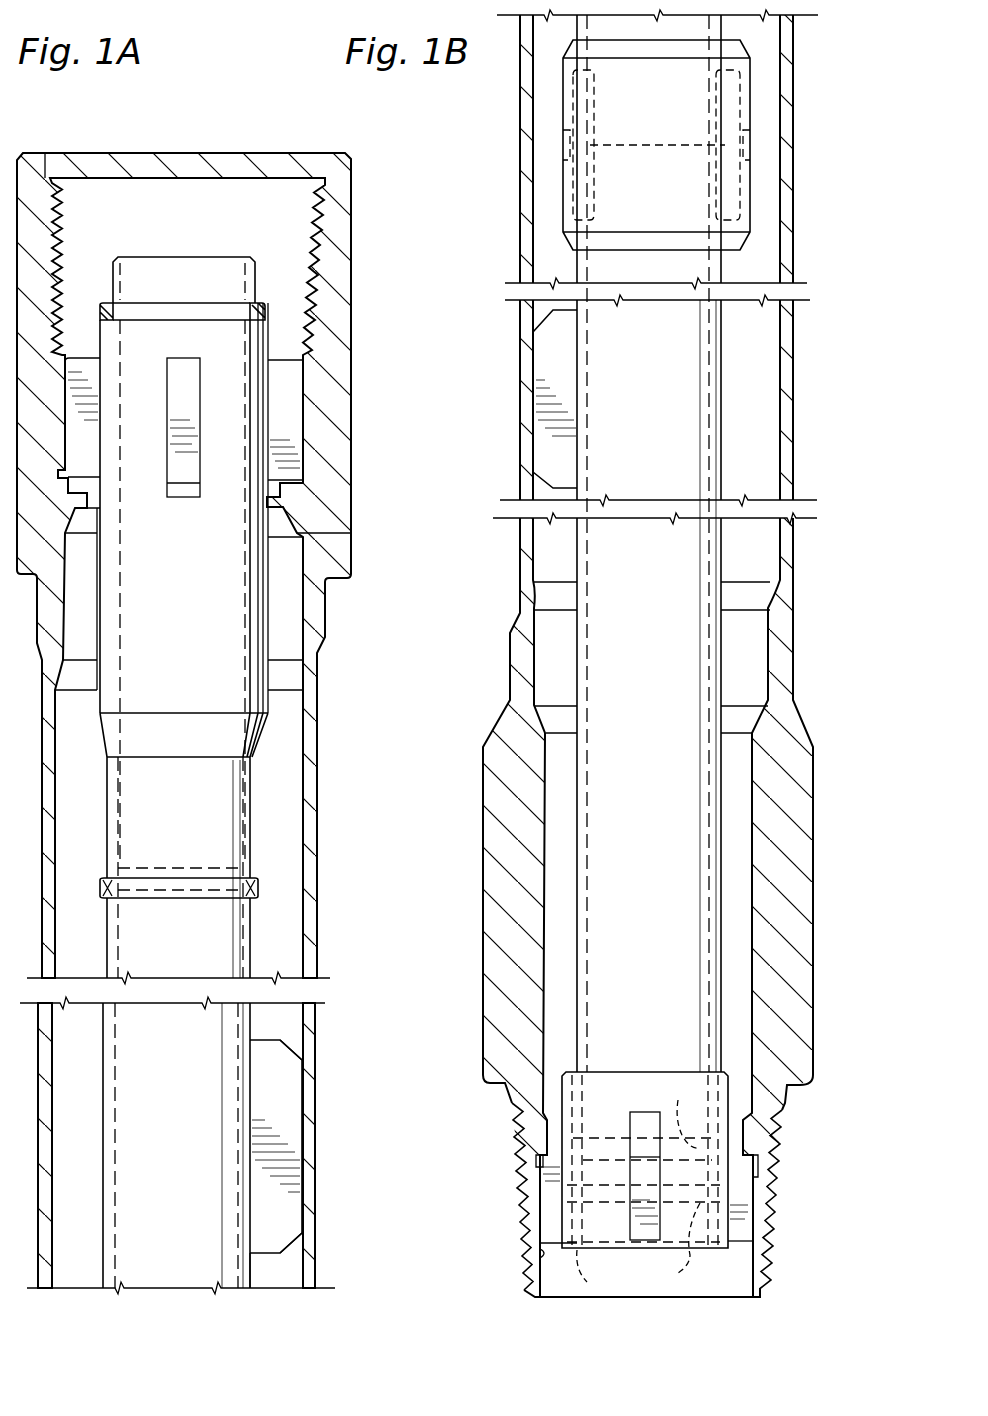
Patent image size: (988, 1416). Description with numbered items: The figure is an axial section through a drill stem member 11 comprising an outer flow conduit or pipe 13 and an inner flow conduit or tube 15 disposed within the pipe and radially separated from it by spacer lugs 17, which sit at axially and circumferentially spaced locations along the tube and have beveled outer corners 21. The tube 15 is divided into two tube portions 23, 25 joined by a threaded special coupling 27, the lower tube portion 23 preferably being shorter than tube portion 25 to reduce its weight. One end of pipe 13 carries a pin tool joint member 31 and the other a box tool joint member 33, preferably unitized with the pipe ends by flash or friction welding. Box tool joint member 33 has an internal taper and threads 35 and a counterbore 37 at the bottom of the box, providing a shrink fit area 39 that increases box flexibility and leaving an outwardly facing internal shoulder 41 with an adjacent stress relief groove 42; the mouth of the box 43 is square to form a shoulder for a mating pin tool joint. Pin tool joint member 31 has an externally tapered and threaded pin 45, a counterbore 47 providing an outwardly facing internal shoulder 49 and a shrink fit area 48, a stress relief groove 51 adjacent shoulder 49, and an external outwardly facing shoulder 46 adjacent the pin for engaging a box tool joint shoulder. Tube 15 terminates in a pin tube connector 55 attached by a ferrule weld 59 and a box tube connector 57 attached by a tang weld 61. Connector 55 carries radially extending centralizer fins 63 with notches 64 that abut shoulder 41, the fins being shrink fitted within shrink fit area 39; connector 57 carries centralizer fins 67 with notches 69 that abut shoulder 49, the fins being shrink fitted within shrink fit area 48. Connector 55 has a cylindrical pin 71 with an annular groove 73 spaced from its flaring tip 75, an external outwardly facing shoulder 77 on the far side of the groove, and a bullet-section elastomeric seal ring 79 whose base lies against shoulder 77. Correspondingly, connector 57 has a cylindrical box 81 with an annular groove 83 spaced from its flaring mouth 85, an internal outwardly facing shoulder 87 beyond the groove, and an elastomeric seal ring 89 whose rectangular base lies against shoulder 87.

In FIG. 1A, the drill stem member 11 is at (330, 812).
In FIG. 1B, the outer flow conduit or pipe 13 is at (787, 172).
In FIG. 1A, the inner flow conduit or tube 15 is at (254, 1280).
In FIG. 1A, the spacer lugs 17 is at (280, 1103).
In FIG. 1B, the spacer lugs 17 is at (553, 352).
In FIG. 1A, the beveled outer corners 21 is at (293, 1050).
In FIG. 1B, the tube portion 23 is at (721, 397).
In FIG. 1A, the tube portion 25 is at (245, 957).
In FIG. 1B, the threaded special coupling 27 is at (672, 114).
In FIG. 1B, the pin tool joint member 31 is at (798, 802).
In FIG. 1A, the box tool joint member 33 is at (330, 462).
In FIG. 1A, the internal taper and threads 35 is at (313, 250).
In FIG. 1A, the counterbore 37 is at (292, 390).
In FIG. 1A, the shrink fit area 39 is at (300, 367).
In FIG. 1A, the outwardly facing internal shoulder 41 is at (293, 467).
In FIG. 1A, the stress relief groove 42 is at (305, 477).
In FIG. 1A, the mouth of the box 43 is at (36, 152).
In FIG. 1B, the externally tapered and threaded pin 45 is at (520, 1183).
In FIG. 1B, the external outwardly facing shoulder 46 is at (490, 1083).
In FIG. 1B, the counterbore 47 is at (545, 1298).
In FIG. 1B, the shrink fit area 48 is at (540, 1252).
In FIG. 1B, the outwardly facing internal shoulder 49 is at (755, 1172).
In FIG. 1B, the stress relief groove 51 is at (536, 1160).
In FIG. 1A, the pin tube connector 55 is at (250, 345).
In FIG. 1B, the box tube connector 57 is at (612, 1085).
In FIG. 1A, the ferrule weld 59 is at (258, 890).
In FIG. 1B, the tang weld 61 is at (682, 1114).
In FIG. 1A, the centralizer fins 63 is at (287, 423).
In FIG. 1A, the notches 64 is at (285, 497).
In FIG. 1B, the centralizer fins 67 is at (740, 1244).
In FIG. 1B, the notches 69 is at (755, 1148).
In FIG. 1A, the cylindrical pin 71 is at (147, 270).
In FIG. 1A, the annular groove 73 is at (200, 312).
In FIG. 1A, the flaring tip 75 is at (113, 258).
In FIG. 1A, the external outwardly facing shoulder 77 is at (162, 313).
In FIG. 1A, the elastomeric seal ring 79 is at (260, 307).
In FIG. 1B, the cylindrical box 81 is at (700, 1105).
In FIG. 1B, the annular groove 83 is at (727, 1203).
In FIG. 1B, the flaring mouth 85 is at (598, 1272).
In FIG. 1B, the internal outwardly facing shoulder 87 is at (727, 1183).
In FIG. 1B, the elastomeric seal ring 89 is at (680, 1248).